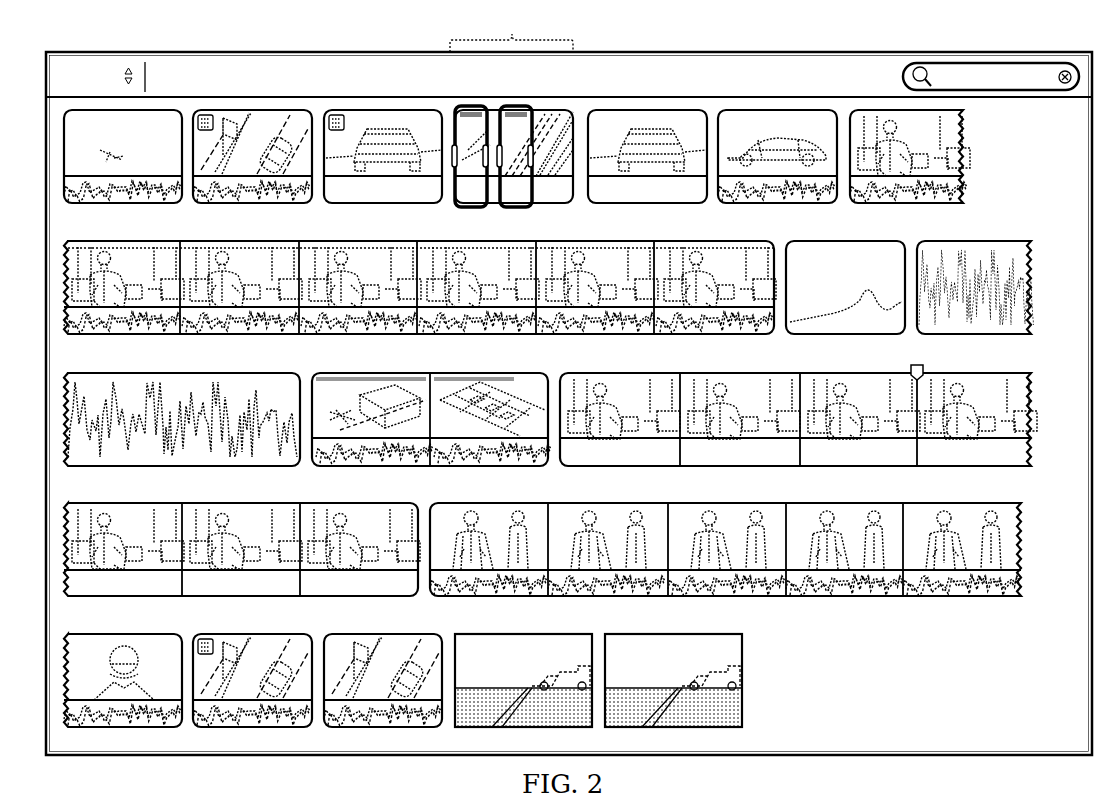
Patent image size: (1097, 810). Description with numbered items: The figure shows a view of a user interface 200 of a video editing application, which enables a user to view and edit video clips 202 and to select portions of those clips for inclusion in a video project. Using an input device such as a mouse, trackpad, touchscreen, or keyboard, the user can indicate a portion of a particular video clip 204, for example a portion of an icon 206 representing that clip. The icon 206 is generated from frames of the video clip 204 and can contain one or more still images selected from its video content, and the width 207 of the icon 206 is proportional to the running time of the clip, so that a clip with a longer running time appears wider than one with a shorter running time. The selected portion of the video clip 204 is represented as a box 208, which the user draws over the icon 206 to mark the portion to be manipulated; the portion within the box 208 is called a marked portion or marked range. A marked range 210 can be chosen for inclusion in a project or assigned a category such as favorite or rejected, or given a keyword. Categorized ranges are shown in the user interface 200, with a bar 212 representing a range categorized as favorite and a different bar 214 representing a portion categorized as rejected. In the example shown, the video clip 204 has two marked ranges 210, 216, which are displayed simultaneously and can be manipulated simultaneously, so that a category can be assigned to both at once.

The user interface 200 is at (196, 38).
The video clips 202 is at (1041, 410).
The video clip 204 is at (566, 72).
The icon 206 is at (555, 112).
The width 207 is at (511, 31).
The box 208 is at (448, 212).
The marked range 210 is at (464, 106).
The bar 212 is at (350, 364).
The bar 214 is at (428, 364).
The marked range 216 is at (516, 106).